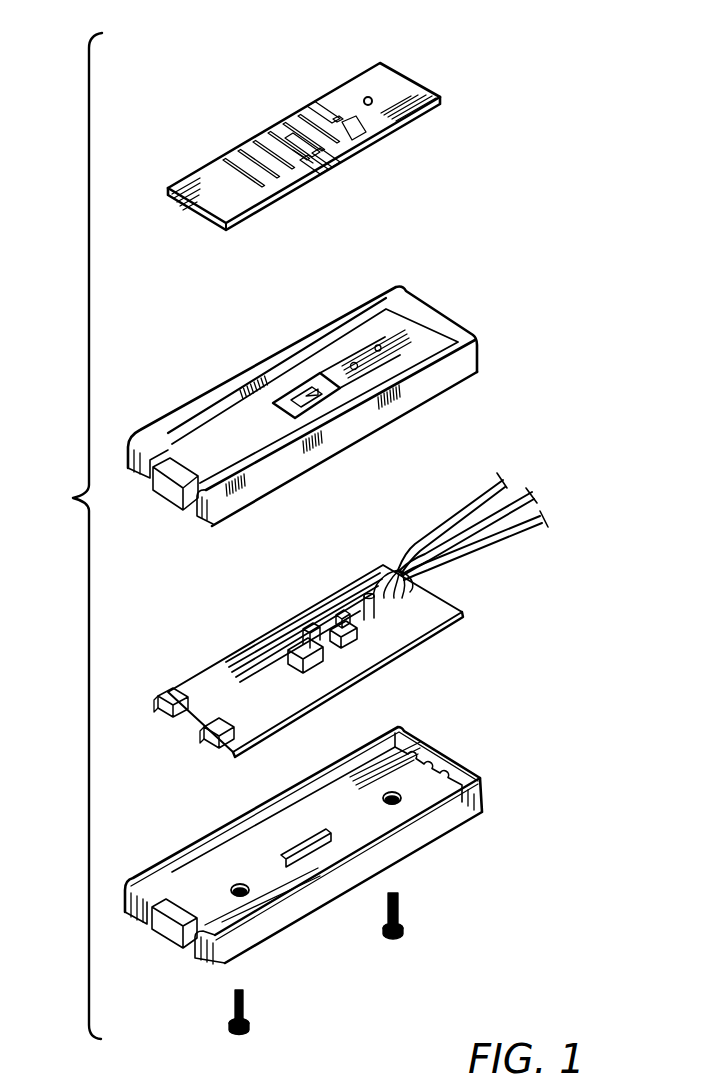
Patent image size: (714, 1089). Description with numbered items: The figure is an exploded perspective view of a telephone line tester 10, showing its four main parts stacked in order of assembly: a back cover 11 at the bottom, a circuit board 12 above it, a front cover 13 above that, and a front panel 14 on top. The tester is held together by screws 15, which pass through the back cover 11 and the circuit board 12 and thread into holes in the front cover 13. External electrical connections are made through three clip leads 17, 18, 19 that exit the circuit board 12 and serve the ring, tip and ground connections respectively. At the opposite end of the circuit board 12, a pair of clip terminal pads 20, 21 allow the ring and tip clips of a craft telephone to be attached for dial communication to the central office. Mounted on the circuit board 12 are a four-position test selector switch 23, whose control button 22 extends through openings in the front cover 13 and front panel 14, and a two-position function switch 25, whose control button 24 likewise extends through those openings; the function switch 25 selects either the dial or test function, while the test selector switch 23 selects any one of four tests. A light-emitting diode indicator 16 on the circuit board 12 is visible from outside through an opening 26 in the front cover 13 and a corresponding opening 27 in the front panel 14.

The telephone line tester 10 is at (69, 536).
The back cover 11 is at (482, 777).
The circuit board 12 is at (438, 613).
The front cover 13 is at (470, 334).
The front panel 14 is at (441, 100).
The screws 15 is at (400, 917).
The light-emitting diode indicator 16 is at (370, 593).
The clip lead 17 is at (475, 492).
The clip lead 18 is at (517, 493).
The clip lead 19 is at (507, 543).
The clip terminal pad 20 is at (166, 695).
The clip terminal pad 21 is at (201, 738).
The control button 22 is at (306, 632).
The four-position test selector switch 23 is at (313, 658).
The control button 24 is at (342, 614).
The two-position function switch 25 is at (353, 630).
The opening 26 is at (355, 362).
The opening 27 is at (368, 97).